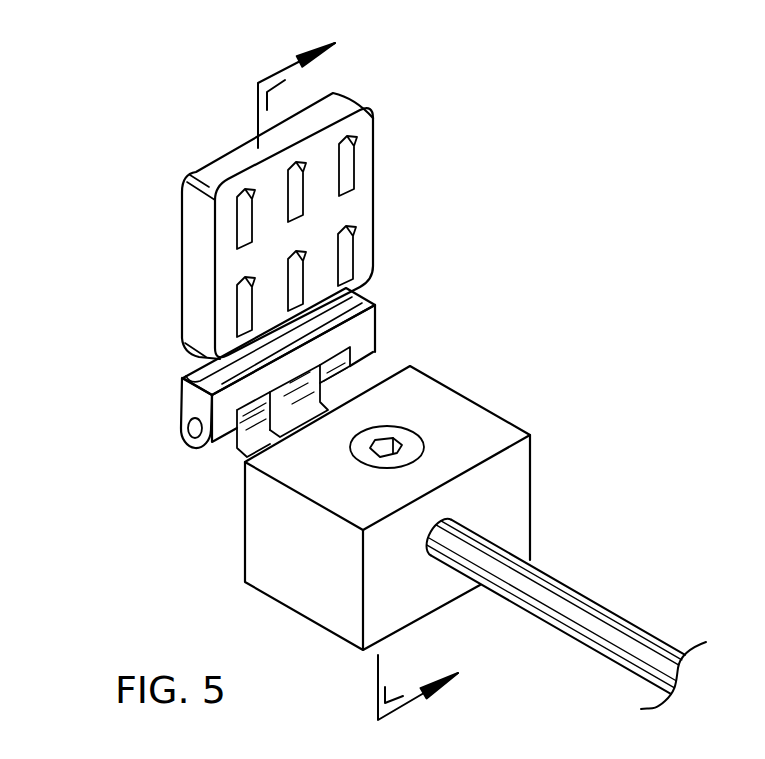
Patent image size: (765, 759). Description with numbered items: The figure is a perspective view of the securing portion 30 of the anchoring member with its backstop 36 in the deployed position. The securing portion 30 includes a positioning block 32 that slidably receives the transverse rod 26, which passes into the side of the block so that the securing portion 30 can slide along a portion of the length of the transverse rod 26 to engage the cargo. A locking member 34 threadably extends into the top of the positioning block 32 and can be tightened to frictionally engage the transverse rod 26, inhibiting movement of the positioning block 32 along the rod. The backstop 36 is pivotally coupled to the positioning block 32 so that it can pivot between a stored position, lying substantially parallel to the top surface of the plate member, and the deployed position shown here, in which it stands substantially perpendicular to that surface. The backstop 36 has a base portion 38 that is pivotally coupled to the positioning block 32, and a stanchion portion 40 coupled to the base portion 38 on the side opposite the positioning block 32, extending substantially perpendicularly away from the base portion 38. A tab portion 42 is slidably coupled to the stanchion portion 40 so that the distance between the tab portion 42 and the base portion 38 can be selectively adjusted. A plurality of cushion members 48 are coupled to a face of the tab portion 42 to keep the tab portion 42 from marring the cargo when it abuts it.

The transverse rod 26 is at (567, 590).
The securing portion 30 is at (573, 239).
The positioning block 32 is at (507, 484).
The locking member 34 is at (411, 445).
The backstop 36 is at (371, 112).
The base portion 38 is at (372, 291).
The stanchion portion 40 is at (187, 374).
The tab portion 42 is at (360, 188).
The cushion members 48 is at (352, 153).